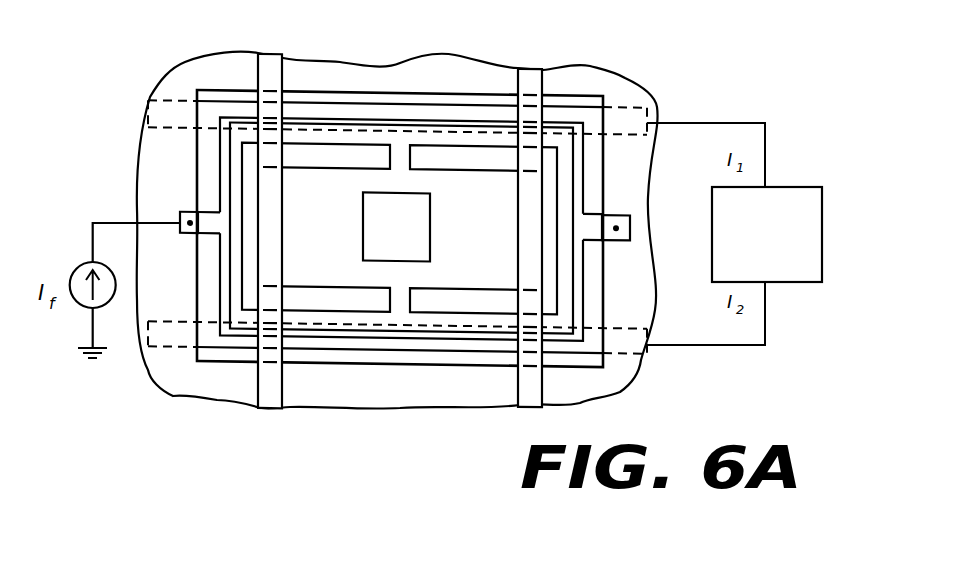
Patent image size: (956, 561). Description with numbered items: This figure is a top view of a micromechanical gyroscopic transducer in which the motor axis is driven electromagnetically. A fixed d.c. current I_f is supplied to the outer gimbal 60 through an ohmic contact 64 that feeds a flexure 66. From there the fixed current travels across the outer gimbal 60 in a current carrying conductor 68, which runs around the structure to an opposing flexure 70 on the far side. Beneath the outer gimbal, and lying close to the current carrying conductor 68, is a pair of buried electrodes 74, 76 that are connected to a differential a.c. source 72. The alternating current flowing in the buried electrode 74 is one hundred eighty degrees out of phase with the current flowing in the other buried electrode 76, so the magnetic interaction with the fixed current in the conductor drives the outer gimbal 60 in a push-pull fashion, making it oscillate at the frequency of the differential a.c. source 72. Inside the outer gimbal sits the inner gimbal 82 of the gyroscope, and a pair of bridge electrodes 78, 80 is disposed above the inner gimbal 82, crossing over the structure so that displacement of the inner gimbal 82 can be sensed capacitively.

The outer gimbal 60 is at (330, 128).
The ohmic contact 64 is at (183, 212).
The flexure 66 is at (210, 236).
The current carrying conductor 68 is at (445, 124).
The opposing flexure 70 is at (589, 224).
The a.c. source 72 is at (811, 186).
The buried electrode 74 is at (648, 112).
The buried electrode 76 is at (650, 350).
The bridge electrode 78 is at (532, 68).
The bridge electrode 80 is at (274, 53).
The inner gimbal 82 is at (484, 277).